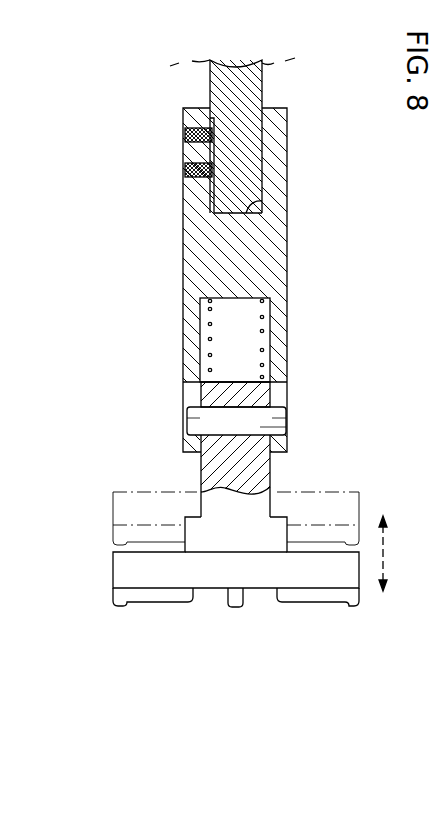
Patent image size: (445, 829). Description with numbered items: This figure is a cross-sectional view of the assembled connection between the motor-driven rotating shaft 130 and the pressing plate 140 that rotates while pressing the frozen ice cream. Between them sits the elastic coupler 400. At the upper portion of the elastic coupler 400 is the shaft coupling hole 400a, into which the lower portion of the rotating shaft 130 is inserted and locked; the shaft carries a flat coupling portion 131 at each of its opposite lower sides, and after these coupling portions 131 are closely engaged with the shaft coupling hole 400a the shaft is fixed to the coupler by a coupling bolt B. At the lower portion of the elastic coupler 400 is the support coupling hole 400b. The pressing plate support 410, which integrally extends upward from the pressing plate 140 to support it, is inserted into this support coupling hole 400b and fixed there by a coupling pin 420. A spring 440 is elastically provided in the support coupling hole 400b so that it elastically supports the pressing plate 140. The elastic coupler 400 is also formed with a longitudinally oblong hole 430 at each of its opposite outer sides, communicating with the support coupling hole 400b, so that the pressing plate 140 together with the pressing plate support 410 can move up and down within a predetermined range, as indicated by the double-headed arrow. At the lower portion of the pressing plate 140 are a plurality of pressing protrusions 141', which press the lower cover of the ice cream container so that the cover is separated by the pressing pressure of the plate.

The rotating shaft 130 is at (262, 92).
The coupling portion 131 is at (184, 152).
The coupling bolt B is at (184, 118).
The elastic coupler 400 is at (197, 242).
The shaft coupling hole 400a is at (258, 206).
The support coupling hole 400b is at (237, 299).
The spring 440 is at (263, 350).
The longitudinally oblong hole 430 is at (193, 393).
The coupling pin 420 is at (193, 417).
The pressing plate support 410 is at (262, 478).
The pressing plate 140 is at (130, 570).
The pressing protrusions 141' is at (236, 625).